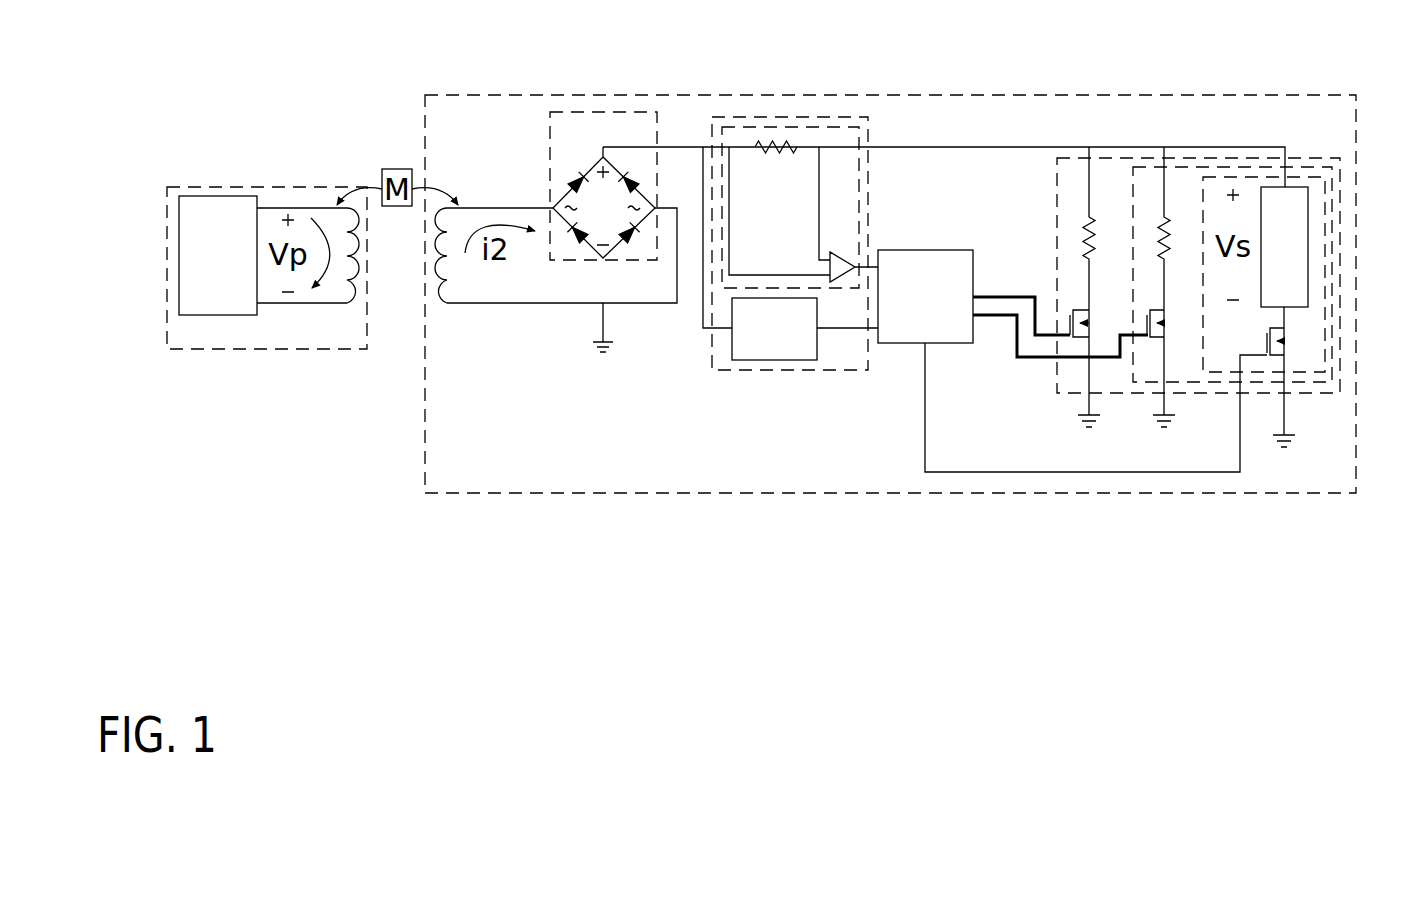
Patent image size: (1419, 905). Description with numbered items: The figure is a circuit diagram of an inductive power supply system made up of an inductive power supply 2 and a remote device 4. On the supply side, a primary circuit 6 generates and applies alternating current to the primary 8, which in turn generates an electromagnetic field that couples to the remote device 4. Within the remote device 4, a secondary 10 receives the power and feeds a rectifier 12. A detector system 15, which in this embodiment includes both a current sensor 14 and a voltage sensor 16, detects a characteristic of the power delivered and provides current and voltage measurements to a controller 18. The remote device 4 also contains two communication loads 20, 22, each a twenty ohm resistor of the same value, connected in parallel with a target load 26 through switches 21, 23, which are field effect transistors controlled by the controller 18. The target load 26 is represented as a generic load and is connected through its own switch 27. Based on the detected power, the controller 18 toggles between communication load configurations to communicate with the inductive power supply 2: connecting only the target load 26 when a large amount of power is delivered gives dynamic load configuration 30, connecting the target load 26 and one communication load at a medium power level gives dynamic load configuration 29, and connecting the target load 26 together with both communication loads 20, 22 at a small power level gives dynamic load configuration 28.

The inductive power supply 2 is at (262, 187).
The remote device 4 is at (677, 95).
The primary circuit 6 is at (218, 196).
The primary 8 is at (338, 207).
The secondary 10 is at (458, 207).
The rectifier 12 is at (600, 112).
The current sensor 14 is at (765, 127).
The detector system 15 is at (828, 117).
The voltage sensor 16 is at (772, 360).
The controller 18 is at (925, 250).
The communication load 20 is at (1088, 225).
The switch 21 is at (1073, 310).
The communication load 22 is at (1165, 225).
The switch 23 is at (1152, 310).
The target load 26 is at (1308, 203).
The switch 27 is at (1285, 345).
The dynamic load configuration 28 is at (1342, 247).
The dynamic load configuration 29 is at (1332, 292).
The dynamic load configuration 30 is at (1325, 340).